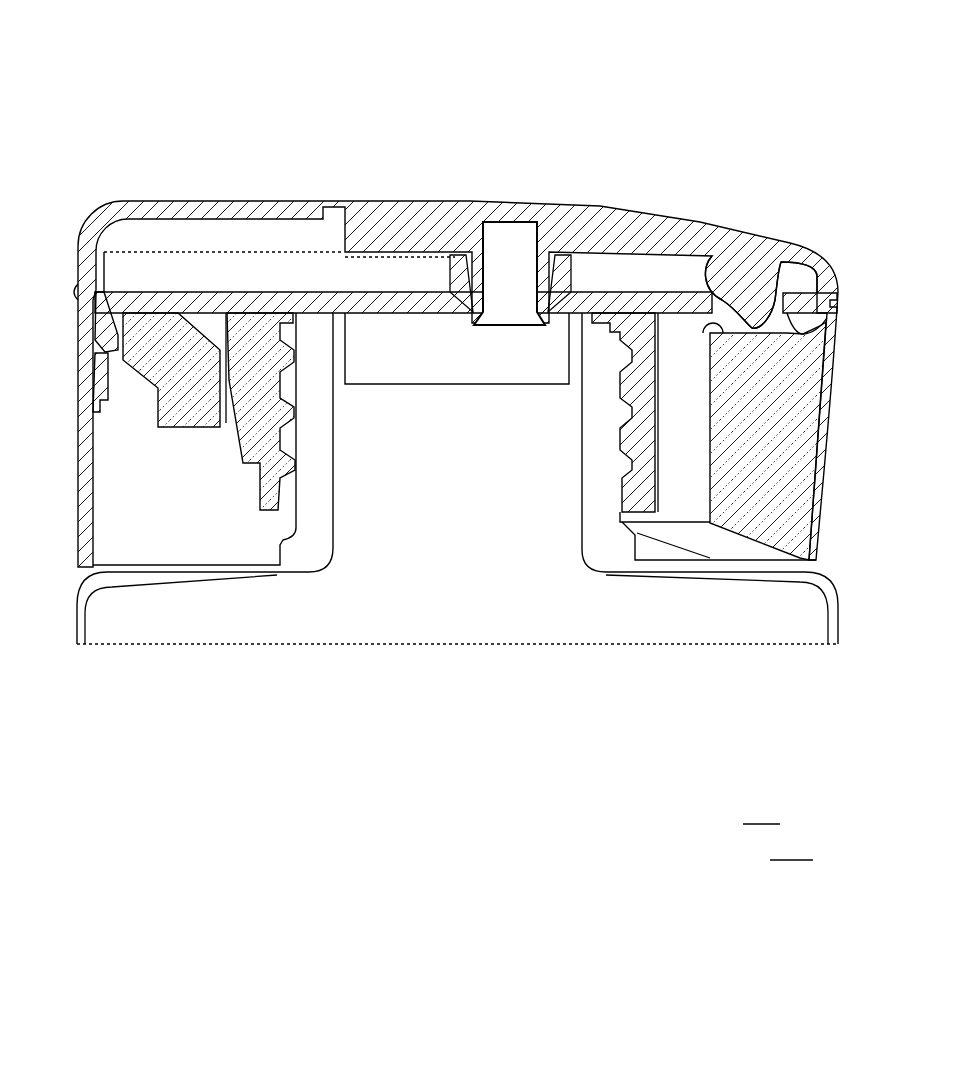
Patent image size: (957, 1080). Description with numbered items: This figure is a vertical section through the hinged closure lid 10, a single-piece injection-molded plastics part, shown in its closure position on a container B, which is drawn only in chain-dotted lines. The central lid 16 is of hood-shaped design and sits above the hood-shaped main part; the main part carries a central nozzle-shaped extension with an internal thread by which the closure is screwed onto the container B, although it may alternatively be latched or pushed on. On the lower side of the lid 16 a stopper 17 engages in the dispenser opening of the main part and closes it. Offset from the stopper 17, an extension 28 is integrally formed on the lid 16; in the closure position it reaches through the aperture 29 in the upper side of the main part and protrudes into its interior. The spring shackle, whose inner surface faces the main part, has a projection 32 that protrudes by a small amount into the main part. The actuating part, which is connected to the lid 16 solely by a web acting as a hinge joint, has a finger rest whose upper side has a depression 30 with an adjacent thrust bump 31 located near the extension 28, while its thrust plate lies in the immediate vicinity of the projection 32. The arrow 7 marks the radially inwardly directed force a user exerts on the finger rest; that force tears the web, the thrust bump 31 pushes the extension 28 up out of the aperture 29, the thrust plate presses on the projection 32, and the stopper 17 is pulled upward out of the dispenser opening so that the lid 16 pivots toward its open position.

The hinged closure lid 10 is at (719, 88).
The lid 16 is at (208, 197).
The stopper 17 is at (507, 311).
The extension 28 is at (753, 305).
The aperture 29 is at (710, 252).
The depression 30 is at (724, 328).
The thrust bump 31 is at (790, 314).
The projection 32 is at (118, 343).
The retaining ring 7 is at (858, 424).
The container B is at (833, 623).